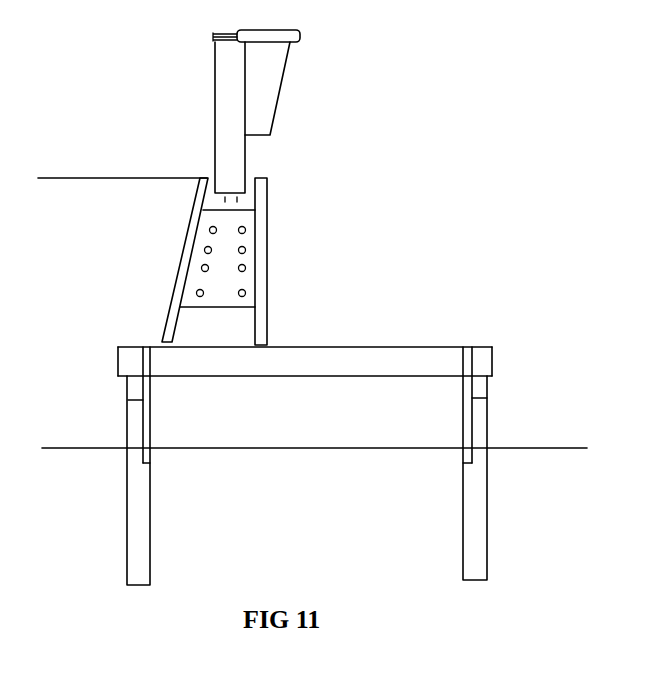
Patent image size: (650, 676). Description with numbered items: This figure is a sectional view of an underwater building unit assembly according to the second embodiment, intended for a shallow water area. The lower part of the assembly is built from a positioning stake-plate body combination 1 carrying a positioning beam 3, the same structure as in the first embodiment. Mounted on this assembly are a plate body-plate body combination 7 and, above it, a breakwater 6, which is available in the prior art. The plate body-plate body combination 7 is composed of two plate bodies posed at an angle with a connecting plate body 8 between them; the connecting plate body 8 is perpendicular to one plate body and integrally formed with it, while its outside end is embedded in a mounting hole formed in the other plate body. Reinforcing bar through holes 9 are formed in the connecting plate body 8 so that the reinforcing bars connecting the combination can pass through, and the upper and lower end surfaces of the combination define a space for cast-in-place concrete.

The positioning stake-plate body combination 1 is at (470, 387).
The positioning beam 3 is at (320, 362).
The breakwater 6 is at (265, 98).
The plate body-plate body combination 7 is at (260, 220).
The connecting plate body 8 is at (245, 257).
The reinforcing bar through hole 9 is at (242, 293).